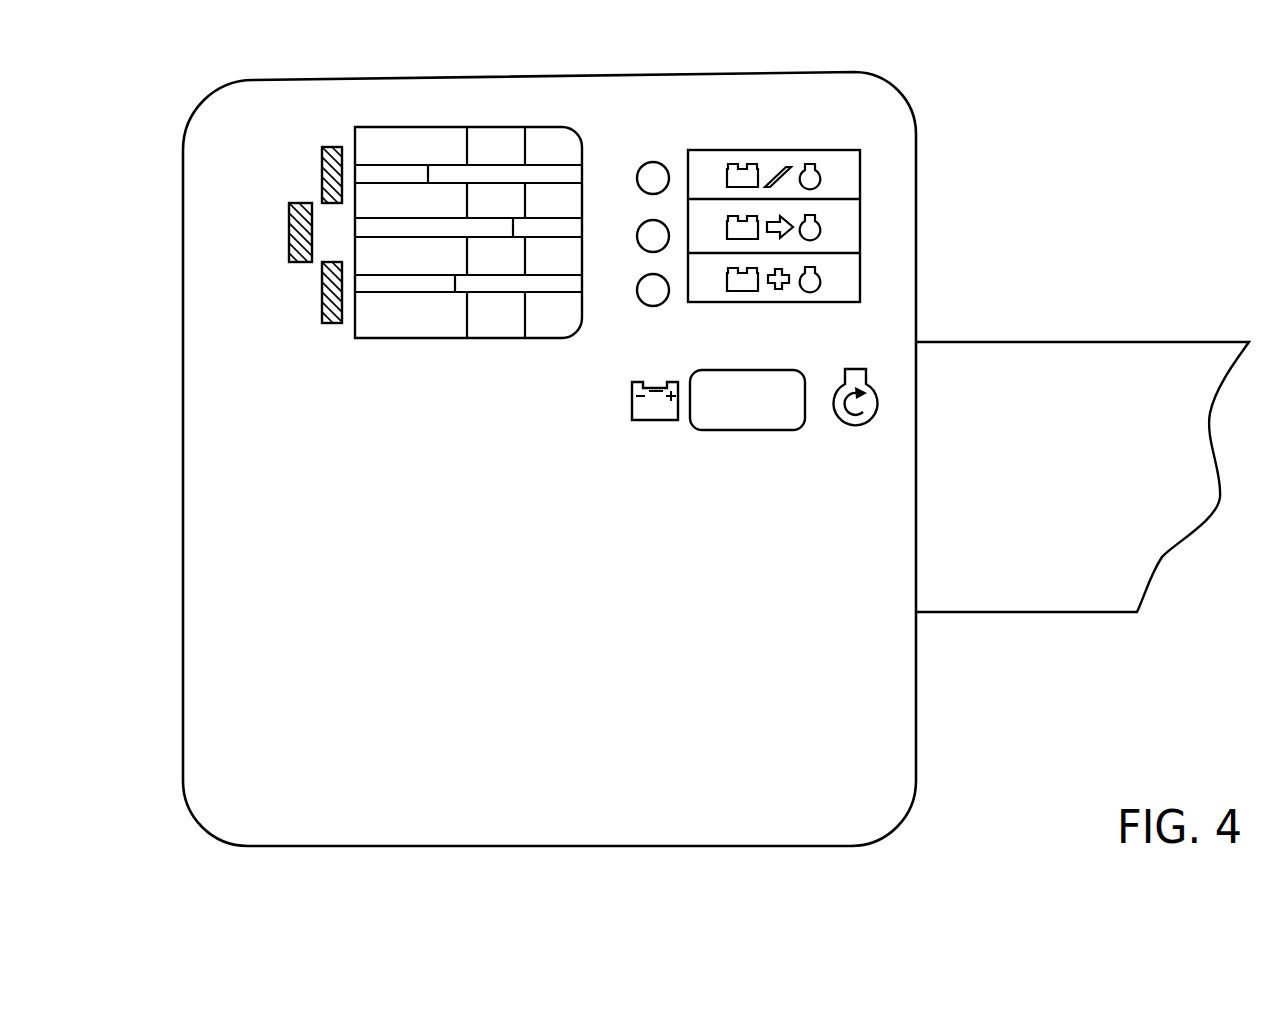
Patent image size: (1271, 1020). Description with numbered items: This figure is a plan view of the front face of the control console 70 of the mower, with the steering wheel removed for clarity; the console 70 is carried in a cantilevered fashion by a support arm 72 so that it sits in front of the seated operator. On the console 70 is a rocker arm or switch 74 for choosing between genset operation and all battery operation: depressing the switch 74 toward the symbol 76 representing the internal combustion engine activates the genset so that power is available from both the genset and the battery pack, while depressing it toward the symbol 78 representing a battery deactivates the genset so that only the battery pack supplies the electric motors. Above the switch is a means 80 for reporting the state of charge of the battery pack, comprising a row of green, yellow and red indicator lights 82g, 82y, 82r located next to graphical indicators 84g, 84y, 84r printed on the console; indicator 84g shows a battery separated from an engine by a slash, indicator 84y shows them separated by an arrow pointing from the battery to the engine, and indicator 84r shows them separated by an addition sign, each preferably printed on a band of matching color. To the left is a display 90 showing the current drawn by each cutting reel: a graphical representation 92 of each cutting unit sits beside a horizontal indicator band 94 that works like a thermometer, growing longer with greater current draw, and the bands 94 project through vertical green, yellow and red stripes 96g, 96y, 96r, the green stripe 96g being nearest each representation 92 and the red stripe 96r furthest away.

The control console 70 is at (152, 598).
The support arm 72 is at (1082, 360).
The rocker arm or switch 74 is at (741, 450).
The symbol representing the internal combustion engine 76 is at (858, 444).
The symbol representing a battery 78 is at (651, 438).
The means for reporting the state of charge of the battery pack 80 is at (888, 207).
The green indicator light 82g is at (653, 162).
The yellow indicator light 82y is at (638, 237).
The red indicator light 82r is at (653, 306).
The graphical indicator 84g is at (862, 170).
The graphical indicator 84y is at (862, 233).
The graphical indicator 84r is at (862, 280).
The display 90 is at (419, 375).
The graphical representation of cutting unit 92 is at (322, 167).
The horizontal indicator light or band 94 is at (412, 173).
The green stripe 96g is at (416, 114).
The yellow stripe 96y is at (498, 146).
The red stripe 96r is at (549, 350).